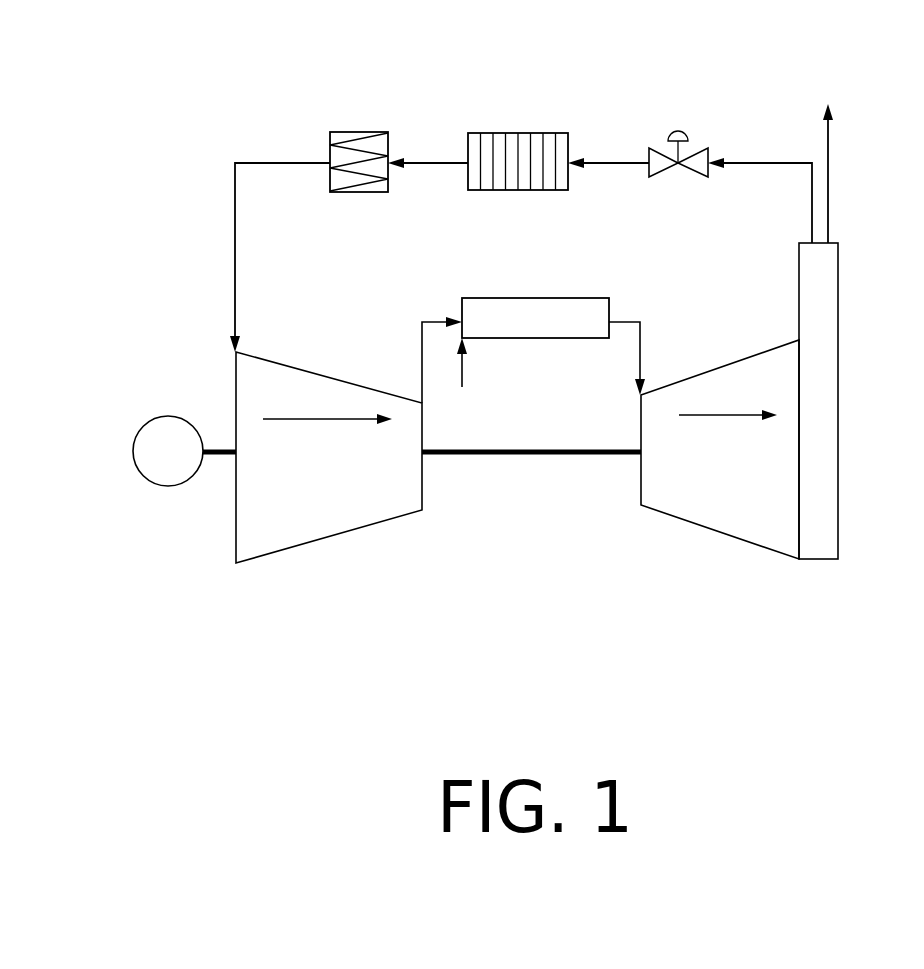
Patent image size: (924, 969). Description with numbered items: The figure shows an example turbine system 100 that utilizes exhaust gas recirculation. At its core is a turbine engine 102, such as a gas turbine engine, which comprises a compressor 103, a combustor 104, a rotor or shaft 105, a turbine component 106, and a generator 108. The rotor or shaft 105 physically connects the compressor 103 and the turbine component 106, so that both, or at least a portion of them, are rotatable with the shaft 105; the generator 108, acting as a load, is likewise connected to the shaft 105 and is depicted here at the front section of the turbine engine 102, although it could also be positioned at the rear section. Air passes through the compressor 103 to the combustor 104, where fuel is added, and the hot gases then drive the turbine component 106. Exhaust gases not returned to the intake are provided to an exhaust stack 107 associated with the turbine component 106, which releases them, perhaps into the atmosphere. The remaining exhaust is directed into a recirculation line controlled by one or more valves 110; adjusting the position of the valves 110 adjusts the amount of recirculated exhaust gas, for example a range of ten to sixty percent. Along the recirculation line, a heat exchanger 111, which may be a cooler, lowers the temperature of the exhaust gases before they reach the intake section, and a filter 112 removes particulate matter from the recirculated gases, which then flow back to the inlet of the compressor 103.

The turbine system 100 is at (233, 108).
The turbine engine 102 is at (829, 607).
The compressor 103 is at (303, 492).
The combustor 104 is at (488, 298).
The rotor or shaft 105 is at (528, 457).
The turbine component 106 is at (708, 519).
The exhaust stack 107 is at (829, 352).
The generator 108 is at (133, 458).
The valve 110 is at (682, 117).
The heat exchanger 111 is at (518, 128).
The filter 112 is at (359, 129).